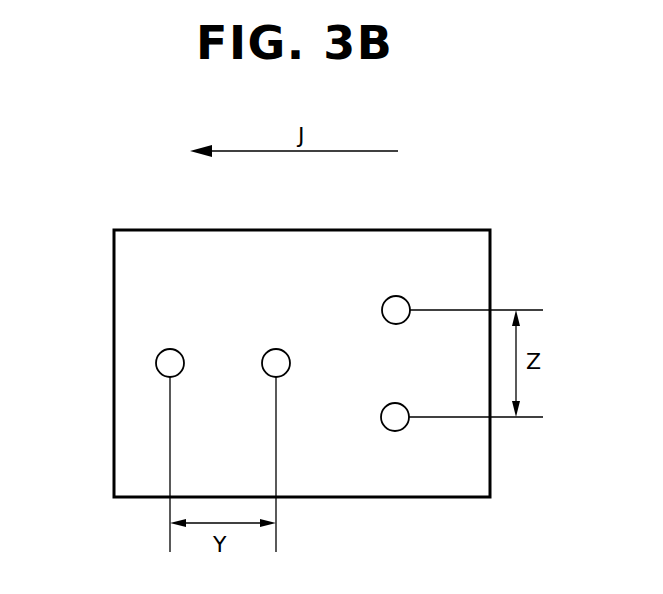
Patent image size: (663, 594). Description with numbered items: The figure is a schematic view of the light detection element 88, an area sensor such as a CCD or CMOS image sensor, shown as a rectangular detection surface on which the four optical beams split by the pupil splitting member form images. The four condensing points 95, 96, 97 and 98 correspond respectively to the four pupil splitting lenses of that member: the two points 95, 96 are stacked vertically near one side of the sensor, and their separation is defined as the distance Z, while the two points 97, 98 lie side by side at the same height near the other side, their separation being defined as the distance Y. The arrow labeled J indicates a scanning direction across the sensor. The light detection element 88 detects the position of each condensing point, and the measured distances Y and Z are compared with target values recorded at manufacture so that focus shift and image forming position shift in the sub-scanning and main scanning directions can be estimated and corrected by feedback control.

The light detection element 88 is at (475, 230).
The condensing point 95 is at (396, 296).
The condensing point 96 is at (406, 429).
The condensing point 97 is at (276, 349).
The condensing point 98 is at (172, 349).